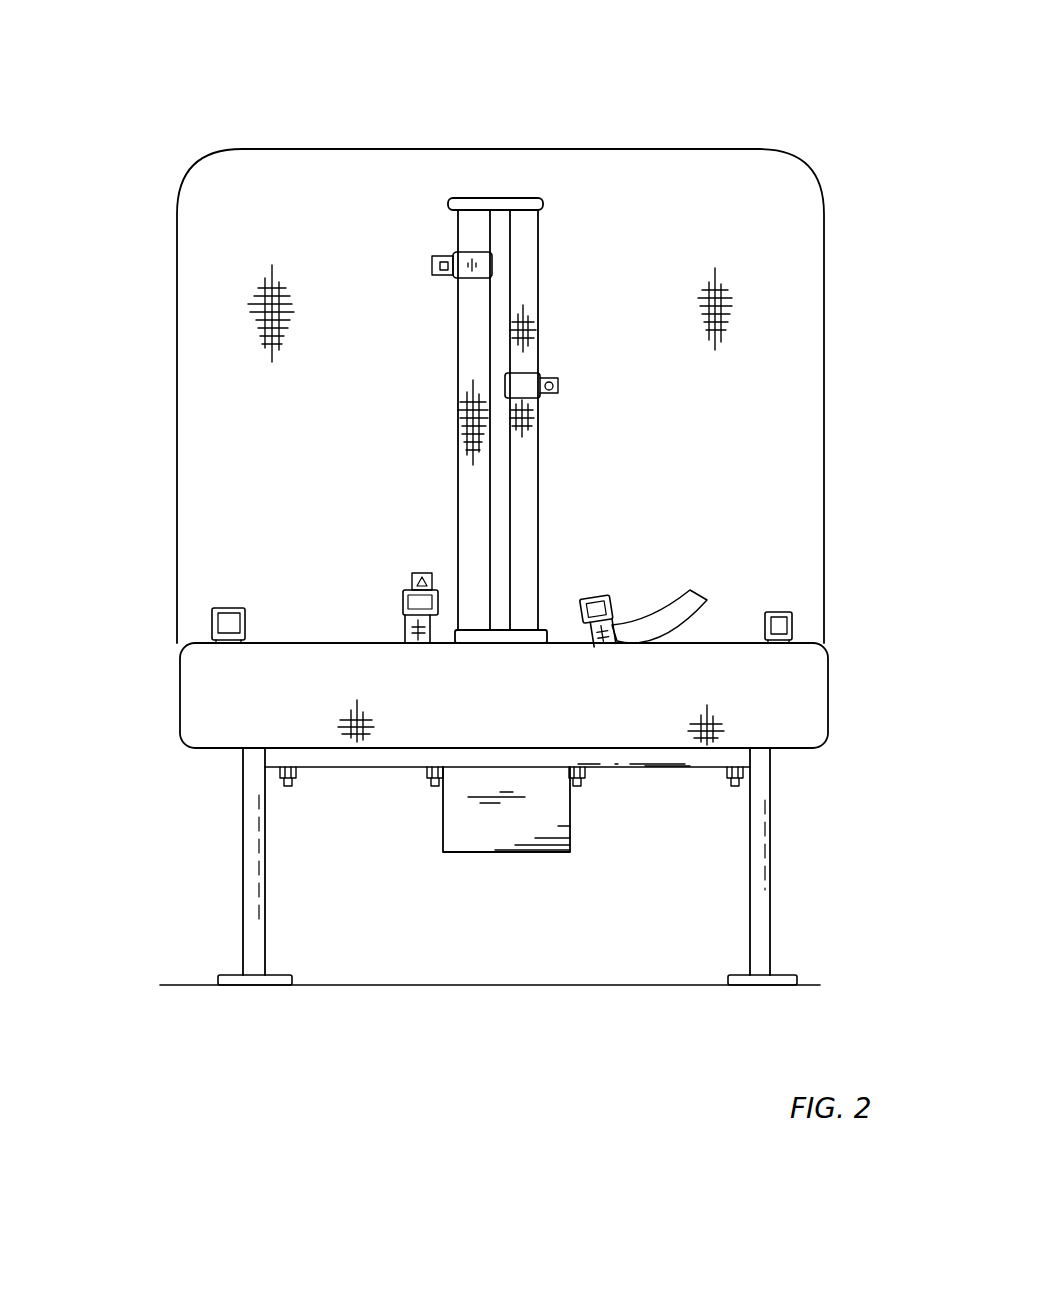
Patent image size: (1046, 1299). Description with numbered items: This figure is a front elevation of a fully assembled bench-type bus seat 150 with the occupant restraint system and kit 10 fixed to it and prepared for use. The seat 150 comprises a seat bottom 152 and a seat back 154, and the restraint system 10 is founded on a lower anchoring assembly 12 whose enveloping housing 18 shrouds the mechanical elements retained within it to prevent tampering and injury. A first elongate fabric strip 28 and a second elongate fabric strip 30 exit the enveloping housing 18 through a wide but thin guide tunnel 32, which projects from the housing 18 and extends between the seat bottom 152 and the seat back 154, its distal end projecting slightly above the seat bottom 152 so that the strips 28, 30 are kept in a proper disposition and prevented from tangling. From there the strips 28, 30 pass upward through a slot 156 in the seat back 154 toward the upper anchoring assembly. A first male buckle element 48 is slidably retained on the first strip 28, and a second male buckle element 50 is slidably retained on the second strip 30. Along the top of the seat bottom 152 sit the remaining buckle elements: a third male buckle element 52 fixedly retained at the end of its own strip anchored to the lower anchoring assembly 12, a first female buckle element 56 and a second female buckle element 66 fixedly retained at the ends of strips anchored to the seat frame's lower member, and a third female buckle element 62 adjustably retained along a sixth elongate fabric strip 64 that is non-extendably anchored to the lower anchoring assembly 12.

The occupant restraint system and kit 10 is at (140, 420).
The lower anchoring assembly 12 is at (415, 804).
The enveloping housing 18 is at (570, 818).
The first elongate fabric strip 28 is at (457, 468).
The second elongate fabric strip 30 is at (538, 449).
The guide tunnel 32 is at (549, 637).
The first male buckle element 48 is at (452, 276).
The second male buckle element 50 is at (540, 373).
The third male buckle element 52 is at (402, 596).
The first female buckle element 56 is at (210, 620).
The third female buckle element 62 is at (607, 596).
The sixth elongate fabric strip 64 is at (640, 628).
The second female buckle element 66 is at (792, 622).
The bus seat 150 is at (705, 118).
The seat bottom 152 is at (443, 705).
The seat back 154 is at (290, 501).
The slot 156 is at (506, 200).